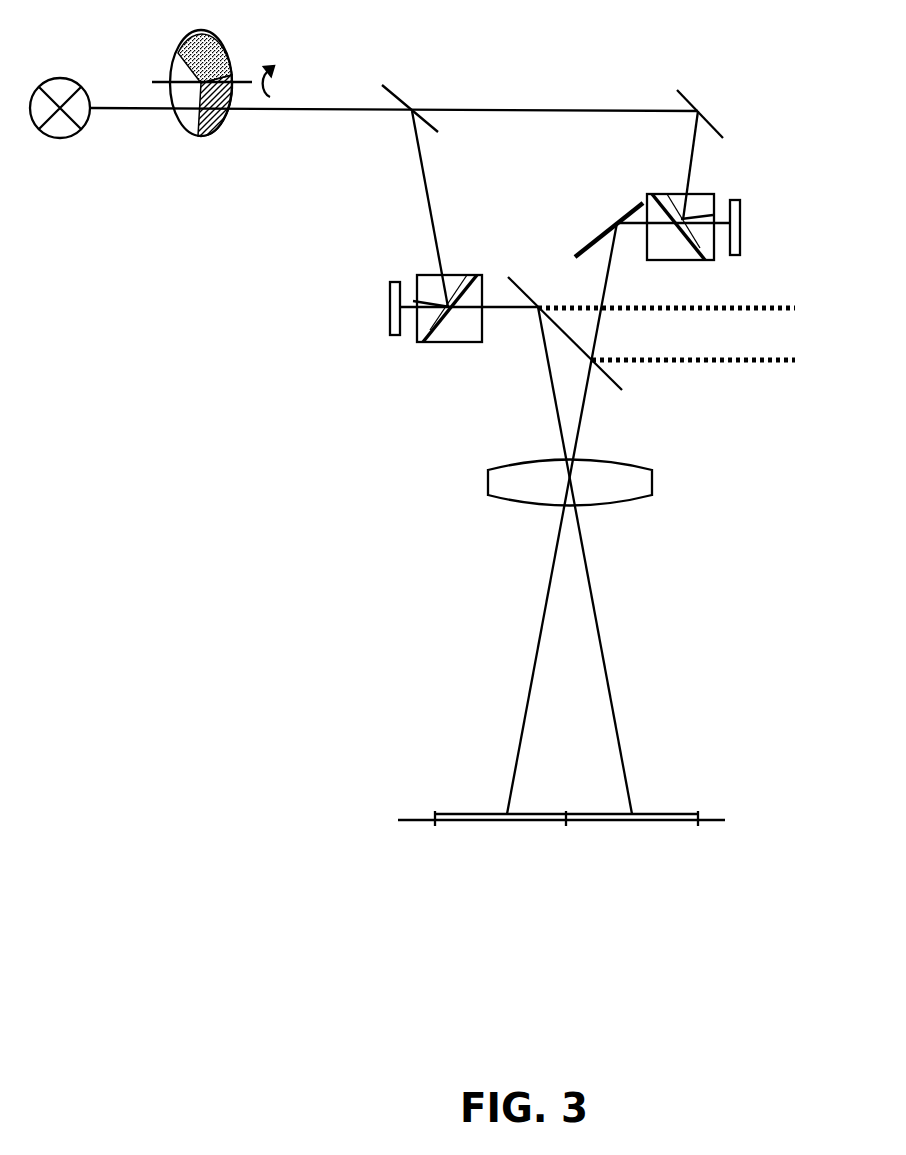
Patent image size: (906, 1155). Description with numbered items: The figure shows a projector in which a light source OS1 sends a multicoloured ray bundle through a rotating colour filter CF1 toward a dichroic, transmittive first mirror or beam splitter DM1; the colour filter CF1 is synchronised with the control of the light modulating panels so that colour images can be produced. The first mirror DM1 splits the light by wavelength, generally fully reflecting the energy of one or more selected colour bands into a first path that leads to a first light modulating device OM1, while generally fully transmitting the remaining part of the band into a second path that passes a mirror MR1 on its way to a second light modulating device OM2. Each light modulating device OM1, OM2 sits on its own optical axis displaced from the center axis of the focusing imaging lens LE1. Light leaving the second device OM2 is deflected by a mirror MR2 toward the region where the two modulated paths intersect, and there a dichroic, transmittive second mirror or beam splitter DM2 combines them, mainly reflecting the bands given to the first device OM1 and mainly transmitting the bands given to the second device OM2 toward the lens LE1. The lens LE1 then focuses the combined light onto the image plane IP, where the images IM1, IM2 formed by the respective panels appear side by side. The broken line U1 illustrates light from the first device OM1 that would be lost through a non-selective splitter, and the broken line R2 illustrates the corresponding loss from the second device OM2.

The light source OS1 is at (63, 89).
The rotating colour filter CF1 is at (213, 75).
The dichroic transmittive first mirror or beam splitter DM1 is at (432, 99).
The mirror MR1 is at (706, 102).
The mirror MR2 is at (609, 216).
The first light modulating device OM1 is at (414, 292).
The second light modulating device OM2 is at (702, 212).
The dichroic transmittive second mirror or beam splitter DM2 is at (562, 317).
The broken line illustrating light loss from OM1 U1 is at (666, 293).
The broken line illustrating light loss from OM2 R2 is at (693, 344).
The focusing imaging lens LE1 is at (592, 471).
The image plane IP is at (570, 806).
The image IM1 is at (632, 839).
The image IM2 is at (500, 839).